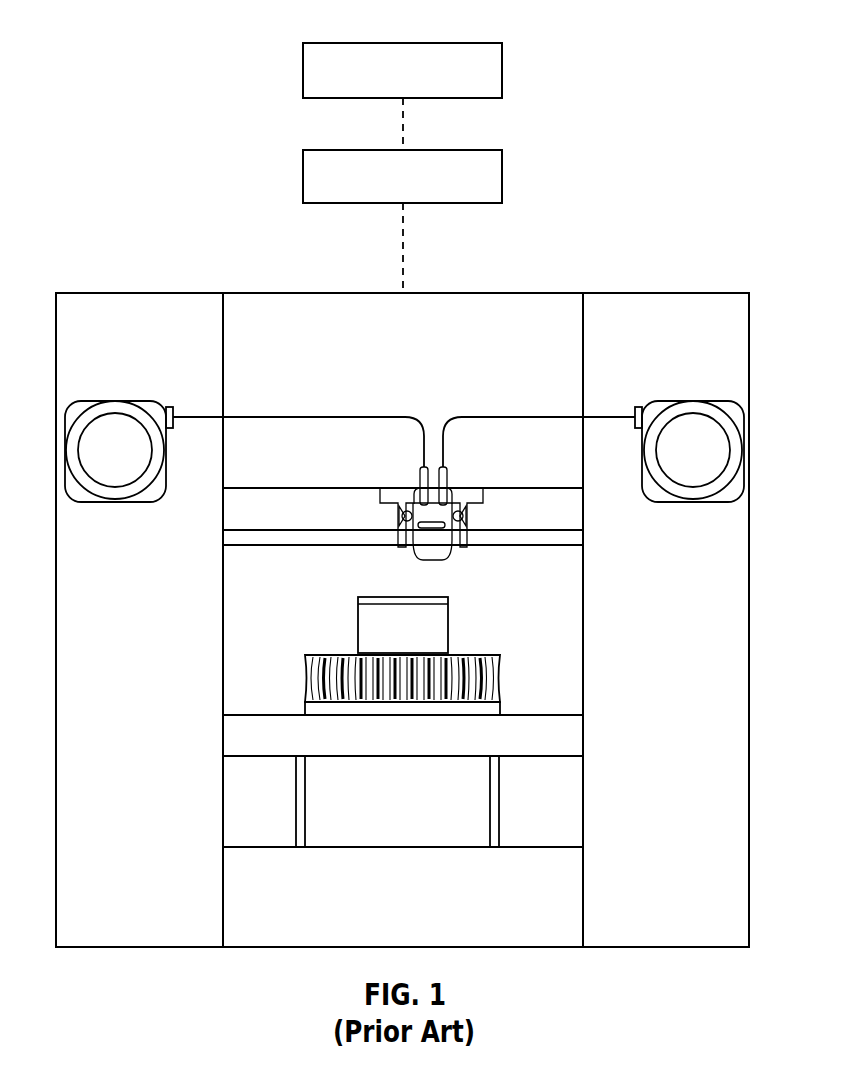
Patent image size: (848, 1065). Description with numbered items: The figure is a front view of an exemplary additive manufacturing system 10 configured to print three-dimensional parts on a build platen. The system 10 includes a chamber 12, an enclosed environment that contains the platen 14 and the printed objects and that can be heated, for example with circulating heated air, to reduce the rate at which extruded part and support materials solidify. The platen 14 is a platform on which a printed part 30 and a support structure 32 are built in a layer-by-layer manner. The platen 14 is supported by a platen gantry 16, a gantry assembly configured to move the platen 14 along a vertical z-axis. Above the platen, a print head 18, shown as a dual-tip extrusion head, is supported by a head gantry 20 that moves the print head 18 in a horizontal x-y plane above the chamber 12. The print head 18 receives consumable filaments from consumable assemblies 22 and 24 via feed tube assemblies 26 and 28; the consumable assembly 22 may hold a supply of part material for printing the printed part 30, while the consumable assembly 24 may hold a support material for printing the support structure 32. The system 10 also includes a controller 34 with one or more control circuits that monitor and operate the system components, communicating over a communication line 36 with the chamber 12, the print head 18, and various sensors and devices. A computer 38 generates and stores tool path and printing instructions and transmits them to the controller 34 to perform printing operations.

The additive manufacturing system 10 is at (104, 74).
The chamber 12 is at (240, 682).
The platen 14 is at (572, 742).
The platen gantry 16 is at (499, 802).
The print head 18 is at (470, 516).
The head gantry 20 is at (292, 530).
The consumable assembly 22 is at (116, 401).
The consumable assembly 24 is at (662, 401).
The feed tube assembly 26 is at (286, 417).
The feed tube assembly 28 is at (556, 417).
The printed part 30 is at (358, 627).
The support structure 32 is at (500, 708).
The controller 34 is at (502, 177).
The communication line 36 is at (403, 273).
The computer 38 is at (502, 70).